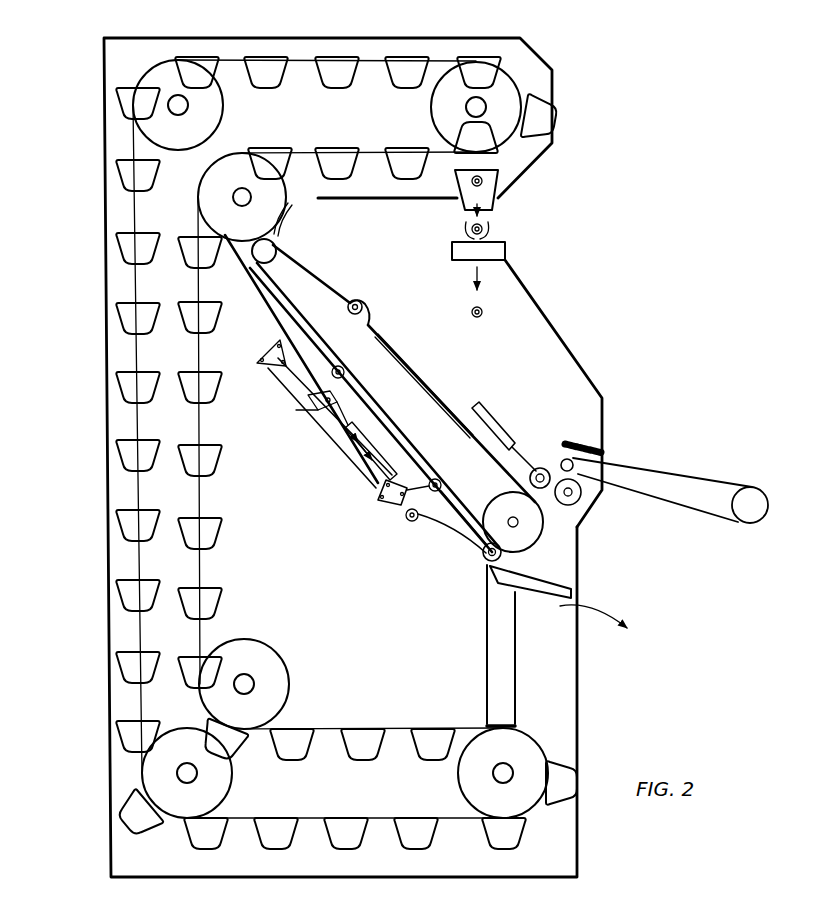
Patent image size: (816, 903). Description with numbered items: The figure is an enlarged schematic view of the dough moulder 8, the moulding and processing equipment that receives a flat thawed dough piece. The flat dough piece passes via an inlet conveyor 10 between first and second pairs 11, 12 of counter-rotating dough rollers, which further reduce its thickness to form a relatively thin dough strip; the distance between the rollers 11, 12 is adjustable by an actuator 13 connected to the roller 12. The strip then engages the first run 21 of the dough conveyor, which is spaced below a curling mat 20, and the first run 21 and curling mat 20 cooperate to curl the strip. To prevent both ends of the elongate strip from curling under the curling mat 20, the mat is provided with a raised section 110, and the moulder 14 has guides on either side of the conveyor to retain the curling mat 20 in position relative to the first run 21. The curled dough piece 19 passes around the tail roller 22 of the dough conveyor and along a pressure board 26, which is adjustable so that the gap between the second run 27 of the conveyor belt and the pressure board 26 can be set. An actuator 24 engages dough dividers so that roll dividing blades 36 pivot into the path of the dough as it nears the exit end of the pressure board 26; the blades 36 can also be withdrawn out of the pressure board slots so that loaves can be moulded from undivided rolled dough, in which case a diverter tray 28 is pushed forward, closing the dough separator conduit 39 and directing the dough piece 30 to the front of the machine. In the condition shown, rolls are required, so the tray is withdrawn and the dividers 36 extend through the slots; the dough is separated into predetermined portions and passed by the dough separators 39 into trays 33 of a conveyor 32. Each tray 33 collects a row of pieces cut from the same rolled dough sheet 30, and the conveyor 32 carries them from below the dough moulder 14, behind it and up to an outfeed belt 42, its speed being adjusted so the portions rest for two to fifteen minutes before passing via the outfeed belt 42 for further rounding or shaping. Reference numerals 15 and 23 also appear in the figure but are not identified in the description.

The dough moulder 8 is at (604, 378).
The inlet conveyor 10 is at (743, 493).
The first pair of counter-rotating dough rollers 11 is at (572, 493).
The second pair of counter-rotating dough rollers 12 is at (538, 468).
The actuator 13 is at (487, 410).
The moulder 14 is at (507, 365).
The housing 15 is at (101, 130).
The curled dough piece 19 is at (357, 300).
The curling mat 20 is at (372, 322).
The first run 21 is at (443, 408).
The tail roller 22 is at (268, 252).
The transfer point 23 is at (486, 569).
The actuator 24 is at (386, 497).
The pressure board 26 is at (262, 300).
The second run 27 is at (340, 348).
The diverter tray 28 is at (575, 591).
The dough piece 30 is at (441, 488).
The conveyor 32 is at (378, 88).
The trays 33 is at (271, 58).
The roll dividing blades 36 is at (443, 523).
The dough separator conduit 39 is at (505, 650).
The outfeed belt 42 is at (493, 254).
The raised section 110 is at (426, 383).